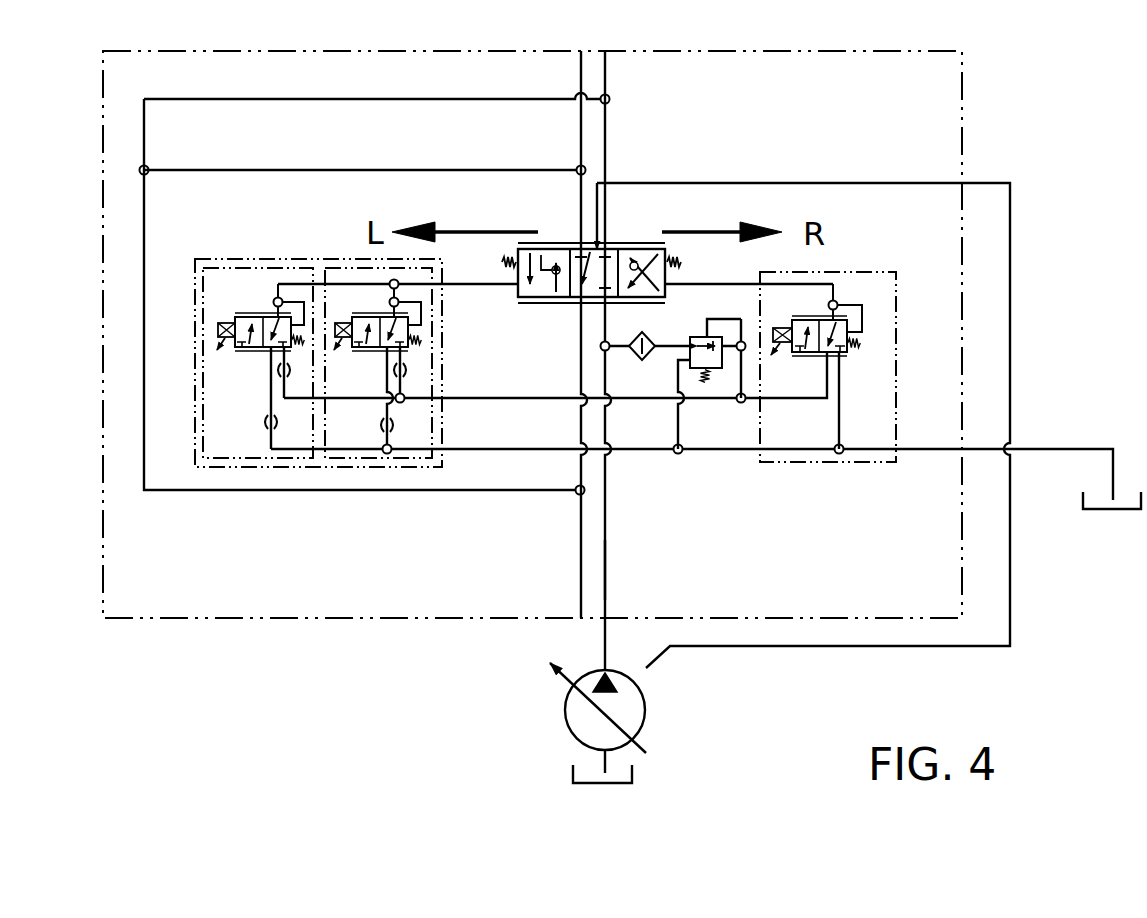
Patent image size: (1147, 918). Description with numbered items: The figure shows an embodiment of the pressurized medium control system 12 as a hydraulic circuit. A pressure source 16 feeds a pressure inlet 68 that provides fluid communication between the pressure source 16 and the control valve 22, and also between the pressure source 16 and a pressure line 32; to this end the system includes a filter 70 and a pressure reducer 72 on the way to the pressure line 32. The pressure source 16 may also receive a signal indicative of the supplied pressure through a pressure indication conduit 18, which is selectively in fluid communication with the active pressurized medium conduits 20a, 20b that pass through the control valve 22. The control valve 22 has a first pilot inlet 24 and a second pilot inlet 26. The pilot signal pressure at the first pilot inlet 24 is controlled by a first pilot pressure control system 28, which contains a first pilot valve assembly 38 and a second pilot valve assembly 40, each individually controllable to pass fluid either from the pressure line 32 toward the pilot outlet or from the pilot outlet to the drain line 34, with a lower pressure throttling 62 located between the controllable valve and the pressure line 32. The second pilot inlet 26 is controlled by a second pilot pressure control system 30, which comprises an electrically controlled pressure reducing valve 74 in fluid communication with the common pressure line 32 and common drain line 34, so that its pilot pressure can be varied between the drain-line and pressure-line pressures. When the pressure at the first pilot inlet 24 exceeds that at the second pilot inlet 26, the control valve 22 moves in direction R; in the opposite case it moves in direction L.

The pressurized medium control system 12 is at (226, 626).
The pressure source 16 is at (525, 711).
The pressure indication conduit 18 is at (845, 183).
The active pressurized medium conduit 20a is at (607, 138).
The active pressurized medium conduit 20b is at (579, 137).
The control valve 22 is at (650, 228).
The first pilot inlet 24 is at (492, 272).
The second pilot inlet 26 is at (680, 279).
The first pilot pressure control system 28 is at (314, 479).
The second pilot pressure control system 30 is at (906, 407).
The pressure line 32 is at (504, 397).
The drain line 34 is at (503, 452).
The first pilot valve assembly 38 is at (257, 470).
The second pilot valve assembly 40 is at (375, 470).
The lower pressure throttling 62 is at (278, 370).
The pressure inlet 68 is at (605, 558).
The filter 70 is at (650, 356).
The pressure reducer 72 is at (712, 372).
The electrically controlled pressure reducing valve 74 is at (880, 331).